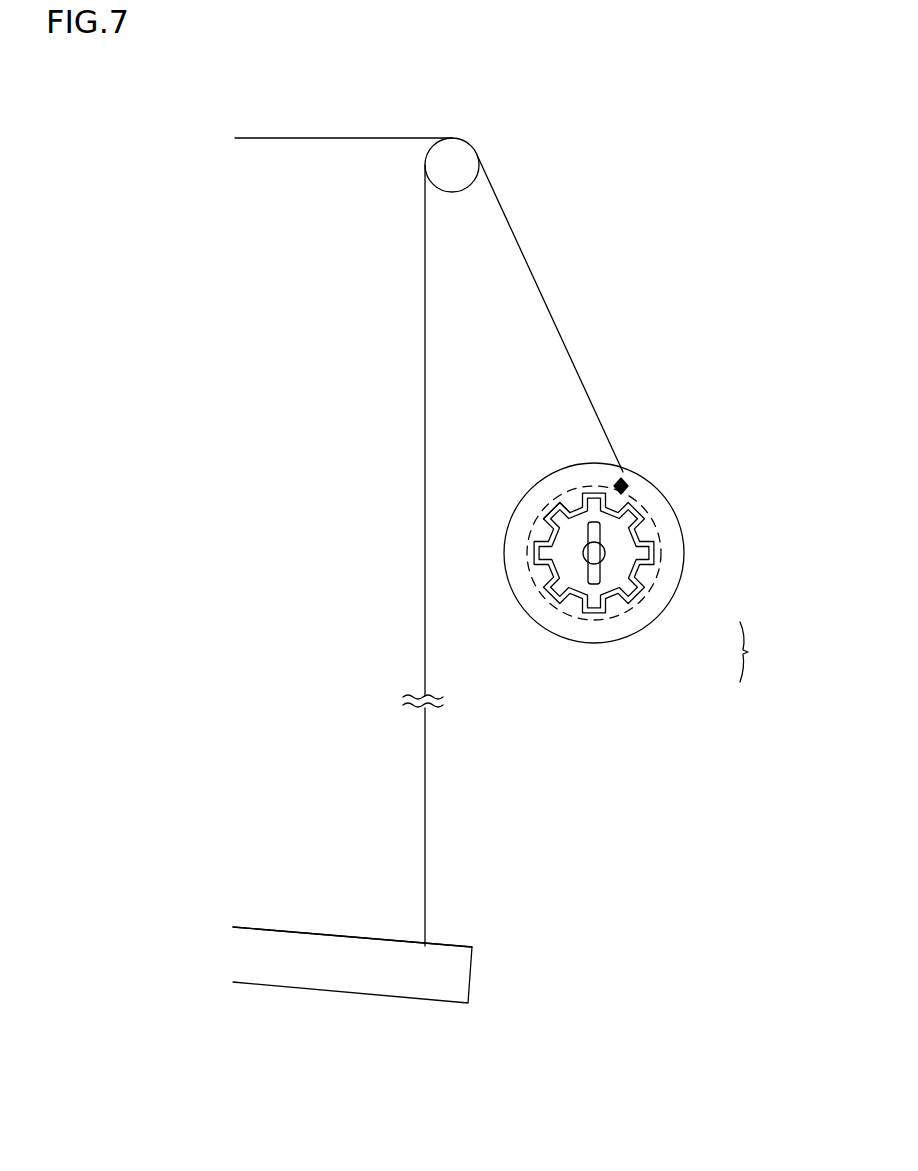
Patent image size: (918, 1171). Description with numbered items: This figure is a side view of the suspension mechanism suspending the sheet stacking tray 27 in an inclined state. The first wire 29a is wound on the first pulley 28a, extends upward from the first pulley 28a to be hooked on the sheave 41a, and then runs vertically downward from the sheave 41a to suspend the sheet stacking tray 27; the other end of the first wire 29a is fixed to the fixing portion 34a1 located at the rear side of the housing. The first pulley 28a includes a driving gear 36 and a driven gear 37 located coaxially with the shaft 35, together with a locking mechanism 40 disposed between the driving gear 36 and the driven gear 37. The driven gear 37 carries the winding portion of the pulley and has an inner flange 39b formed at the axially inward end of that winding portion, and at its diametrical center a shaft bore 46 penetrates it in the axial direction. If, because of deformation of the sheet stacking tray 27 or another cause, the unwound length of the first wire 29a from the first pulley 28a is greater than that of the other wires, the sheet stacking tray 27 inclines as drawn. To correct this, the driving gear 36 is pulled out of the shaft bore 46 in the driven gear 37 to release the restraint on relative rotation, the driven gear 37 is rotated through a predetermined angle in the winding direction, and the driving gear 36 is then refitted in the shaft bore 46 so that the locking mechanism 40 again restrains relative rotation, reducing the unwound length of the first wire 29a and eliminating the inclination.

The sheet stacking tray 27 is at (276, 922).
The first pulley 28a is at (767, 652).
The first wire 29a is at (425, 406).
The fixing portion 34a1 is at (447, 963).
The shaft 35 is at (586, 551).
The driving gear 36 is at (637, 594).
The driven gear 37 is at (668, 600).
The inner flange 39b is at (566, 481).
The locking mechanism 40 is at (545, 516).
The sheave 41a is at (462, 155).
The shaft bore 46 is at (573, 608).